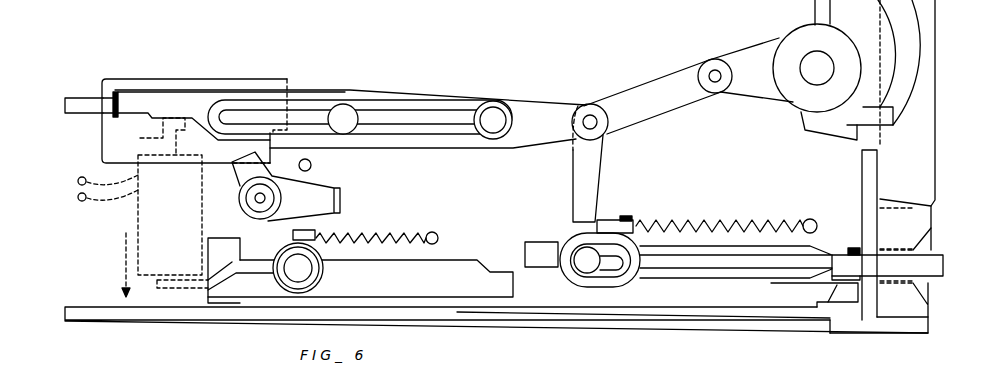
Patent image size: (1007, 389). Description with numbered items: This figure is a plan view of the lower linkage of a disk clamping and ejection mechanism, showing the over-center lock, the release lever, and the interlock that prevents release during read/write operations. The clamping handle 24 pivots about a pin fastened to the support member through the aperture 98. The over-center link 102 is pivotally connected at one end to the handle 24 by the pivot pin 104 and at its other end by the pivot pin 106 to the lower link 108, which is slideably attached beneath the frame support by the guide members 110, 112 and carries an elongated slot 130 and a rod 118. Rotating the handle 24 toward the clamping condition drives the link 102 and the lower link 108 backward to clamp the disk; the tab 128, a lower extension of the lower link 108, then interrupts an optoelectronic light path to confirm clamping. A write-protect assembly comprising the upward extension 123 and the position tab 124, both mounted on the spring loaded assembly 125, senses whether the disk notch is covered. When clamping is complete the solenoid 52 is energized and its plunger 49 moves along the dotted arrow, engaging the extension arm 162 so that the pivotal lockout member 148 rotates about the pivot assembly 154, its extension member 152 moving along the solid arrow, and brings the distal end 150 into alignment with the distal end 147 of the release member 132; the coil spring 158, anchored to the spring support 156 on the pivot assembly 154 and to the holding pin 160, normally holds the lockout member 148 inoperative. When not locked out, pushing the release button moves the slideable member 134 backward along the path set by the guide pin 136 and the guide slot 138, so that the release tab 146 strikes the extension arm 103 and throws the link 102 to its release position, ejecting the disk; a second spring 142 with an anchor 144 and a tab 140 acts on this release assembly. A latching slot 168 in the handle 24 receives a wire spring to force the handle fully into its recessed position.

The handle 24 is at (936, 180).
The solenoid plunger 49 is at (140, 138).
The solenoid 52 is at (137, 234).
The aperture 98 is at (808, 58).
The over-center link 102 is at (655, 62).
The extension arm 103 is at (598, 172).
The pivot pin 104 is at (717, 69).
The pivot pin 106 is at (591, 113).
The lower link 108 is at (395, 91).
The guide member 110 is at (507, 113).
The guide member 112 is at (343, 103).
The rod 118 is at (83, 96).
The upward extension 123 is at (232, 160).
The position tab 124 is at (342, 205).
The spring loaded assembly 125 is at (313, 176).
The tab 128 is at (112, 113).
The slot 130 is at (466, 108).
The release member 132 is at (771, 283).
The slideable member 134 is at (645, 283).
The guide pin 136 is at (598, 270).
The guide slot 138 is at (620, 265).
The tab 140 is at (632, 220).
The spring 142 is at (714, 213).
The spring anchor 144 is at (825, 196).
The release tab 146 is at (610, 220).
The distal end 147 is at (524, 247).
The pivotal lockout member 148 is at (480, 253).
The distal end 150 is at (515, 290).
The extension member 152 is at (455, 300).
The pivot assembly 154 is at (278, 236).
The spring support 156 is at (310, 233).
The coil spring 158 is at (378, 234).
The holding pin 160 is at (441, 234).
The extension arm 162 is at (218, 282).
The latching slot 168 is at (857, 138).